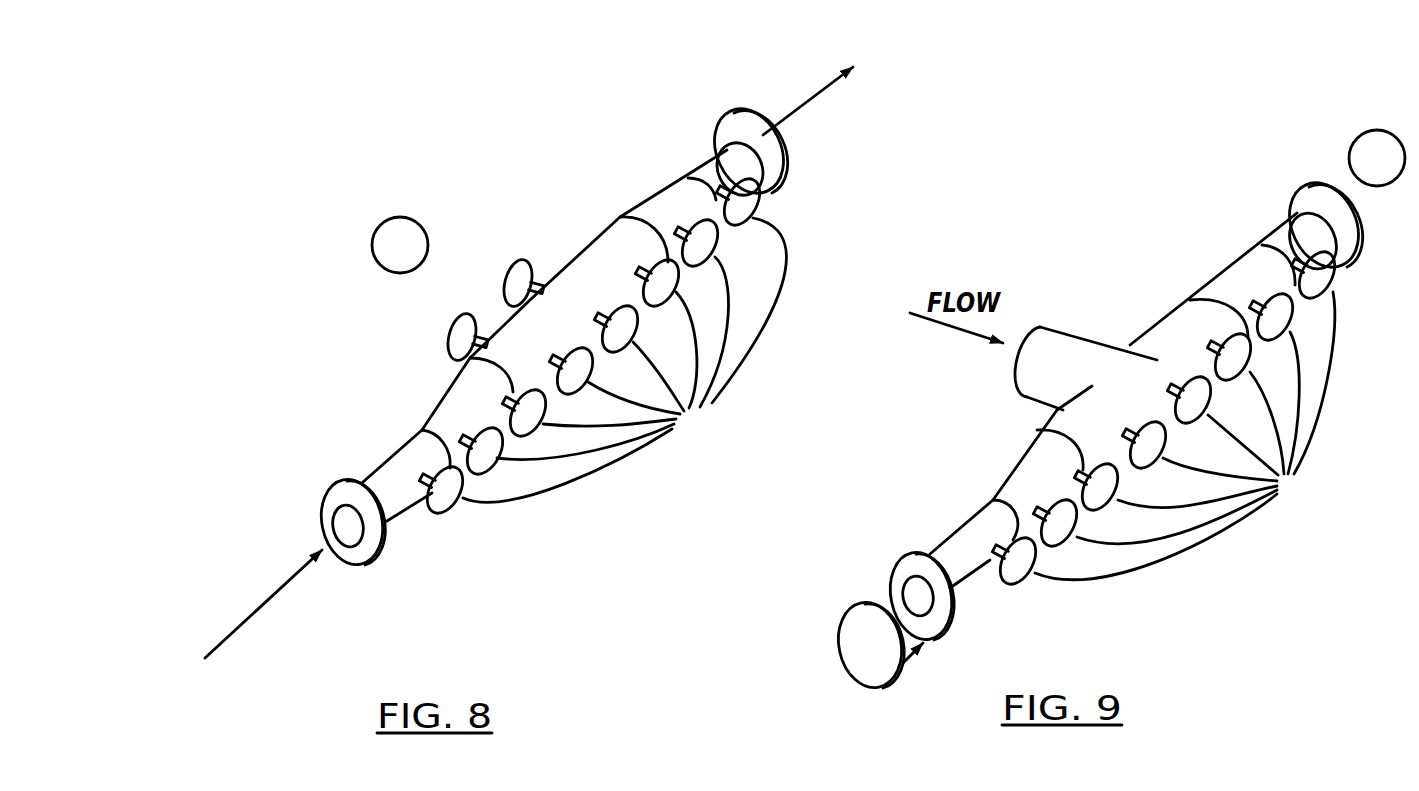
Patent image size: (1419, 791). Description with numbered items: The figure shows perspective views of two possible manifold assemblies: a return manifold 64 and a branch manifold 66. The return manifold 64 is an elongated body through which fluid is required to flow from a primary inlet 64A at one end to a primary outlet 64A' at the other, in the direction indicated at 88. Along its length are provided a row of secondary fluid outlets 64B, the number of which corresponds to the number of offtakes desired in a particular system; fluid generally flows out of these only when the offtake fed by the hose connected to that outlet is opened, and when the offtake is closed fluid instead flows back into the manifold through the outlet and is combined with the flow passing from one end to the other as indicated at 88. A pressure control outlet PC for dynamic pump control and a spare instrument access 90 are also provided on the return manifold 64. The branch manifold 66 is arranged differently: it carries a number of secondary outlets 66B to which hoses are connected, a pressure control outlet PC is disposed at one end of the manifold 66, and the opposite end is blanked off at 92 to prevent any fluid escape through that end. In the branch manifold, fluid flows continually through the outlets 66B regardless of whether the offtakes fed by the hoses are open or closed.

In FIG. 8, the return manifold 64 is at (607, 170).
In FIG. 8, the primary inlet 64A is at (283, 522).
In FIG. 8, the primary outlet 64A' is at (765, 120).
In FIG. 8, the secondary fluid outlets 64B is at (624, 360).
In FIG. 8, the flow direction 88 is at (242, 627).
In FIG. 8, the spare instrument access 90 is at (448, 338).
In FIG. 8, the pressure control outlet PC is at (503, 290).
In FIG. 9, the pressure control outlet PC is at (1343, 203).
In FIG. 9, the branch manifold 66 is at (1122, 275).
In FIG. 9, the secondary outlets 66B is at (1185, 436).
In FIG. 9, the blanked-off end 92 is at (853, 627).